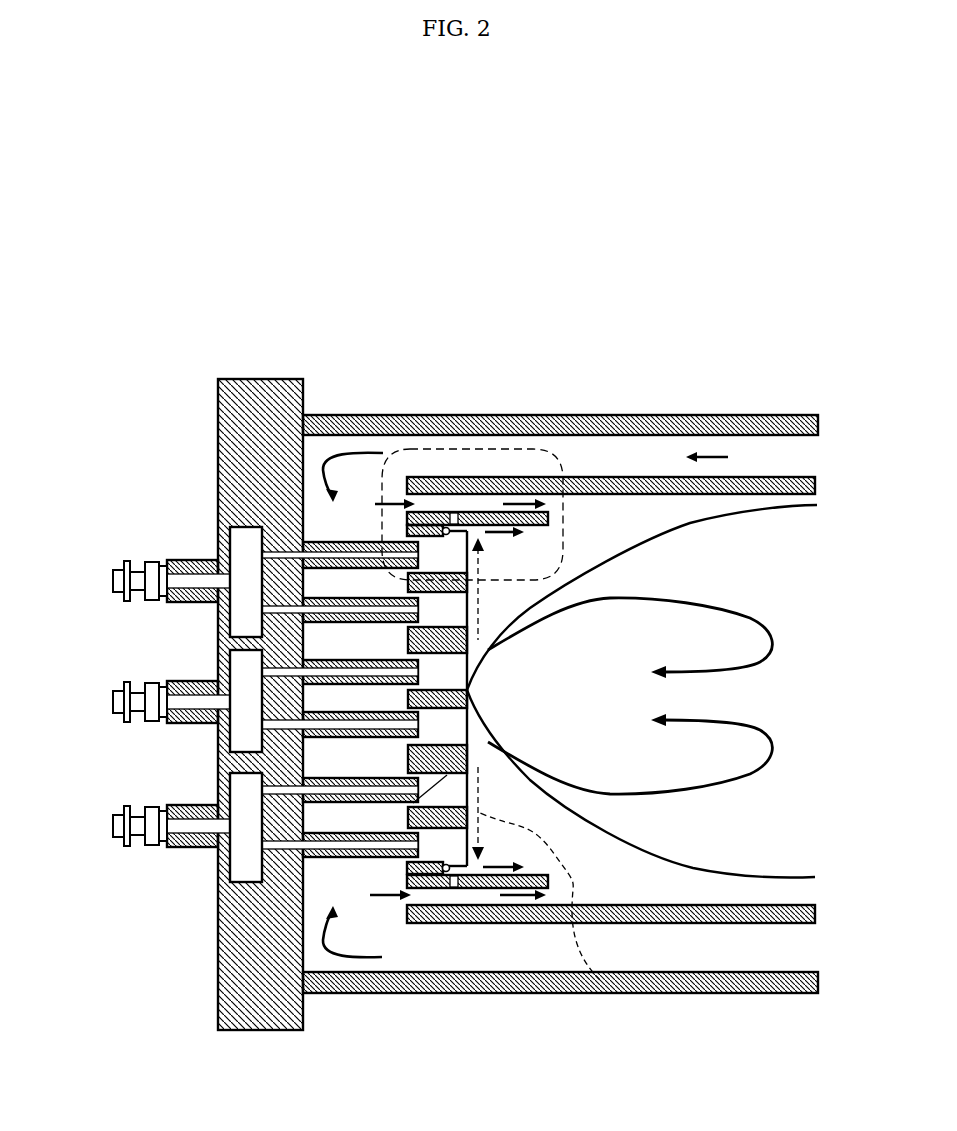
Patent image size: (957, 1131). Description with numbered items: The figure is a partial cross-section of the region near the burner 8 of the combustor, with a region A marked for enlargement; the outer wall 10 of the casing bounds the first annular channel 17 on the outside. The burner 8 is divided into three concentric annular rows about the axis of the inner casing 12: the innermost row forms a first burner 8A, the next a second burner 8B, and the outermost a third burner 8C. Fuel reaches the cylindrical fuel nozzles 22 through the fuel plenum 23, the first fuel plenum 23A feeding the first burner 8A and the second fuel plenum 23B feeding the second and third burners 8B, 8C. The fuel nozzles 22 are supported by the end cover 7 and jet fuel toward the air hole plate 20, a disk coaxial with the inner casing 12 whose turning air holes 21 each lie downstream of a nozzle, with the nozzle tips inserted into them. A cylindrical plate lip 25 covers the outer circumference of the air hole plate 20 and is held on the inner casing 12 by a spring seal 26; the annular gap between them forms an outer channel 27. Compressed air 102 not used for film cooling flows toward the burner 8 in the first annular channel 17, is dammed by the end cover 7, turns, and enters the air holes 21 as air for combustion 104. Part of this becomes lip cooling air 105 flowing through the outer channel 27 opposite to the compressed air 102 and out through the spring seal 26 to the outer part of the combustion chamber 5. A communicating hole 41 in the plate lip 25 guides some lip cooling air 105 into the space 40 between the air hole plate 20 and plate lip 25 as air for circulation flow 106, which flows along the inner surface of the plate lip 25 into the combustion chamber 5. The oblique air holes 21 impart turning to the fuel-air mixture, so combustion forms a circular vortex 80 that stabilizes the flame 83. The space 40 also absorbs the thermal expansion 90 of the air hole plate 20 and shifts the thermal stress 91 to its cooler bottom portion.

The combustion chamber 5 is at (620, 891).
The end cover 7 is at (235, 379).
The burner 8 is at (673, 328).
The first burner 8A is at (107, 655).
The second burner 8B is at (107, 595).
The third burner 8C is at (107, 539).
The outer casing wall 10 is at (560, 653).
The inner casing 12 is at (612, 622).
The first annular channel 17 is at (818, 420).
The air hole plate 20 is at (410, 868).
The air holes 21 is at (407, 822).
The fuel nozzles 22 is at (231, 617).
The fuel plenum 23 is at (144, 662).
The first fuel plenum 23A is at (172, 582).
The second fuel plenum 23B is at (232, 540).
The plate lip 25 is at (603, 477).
The spring seal 26 is at (346, 702).
The outer channel 27 is at (492, 512).
The space 40 is at (472, 531).
The communicating hole 41 is at (447, 527).
The circular vortex 80 is at (753, 777).
The flame 83 is at (762, 880).
The thermal expansion 90 is at (600, 980).
The thermal stress 91 is at (445, 872).
The compressed air 102 is at (768, 458).
The air for combustion 104 is at (345, 455).
The lip cooling air 105 is at (578, 477).
The air for circulation flow 106 is at (498, 540).
The detail region A is at (410, 415).